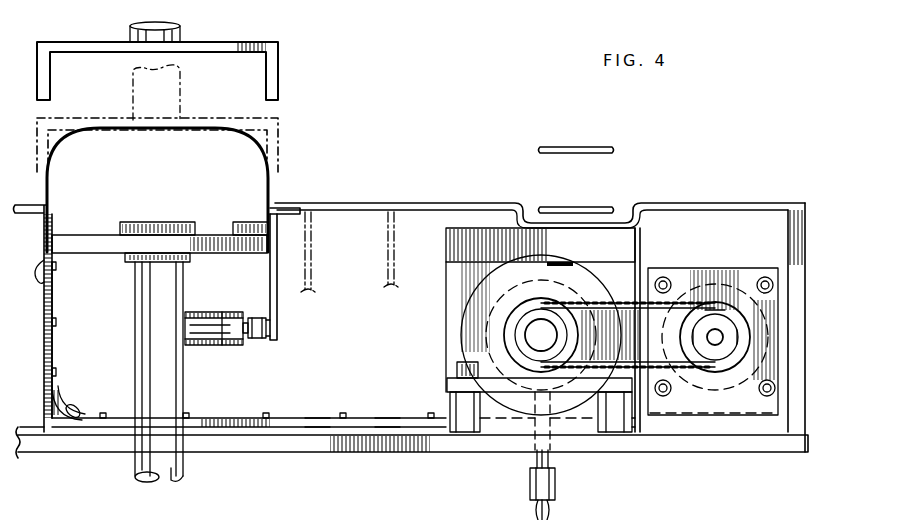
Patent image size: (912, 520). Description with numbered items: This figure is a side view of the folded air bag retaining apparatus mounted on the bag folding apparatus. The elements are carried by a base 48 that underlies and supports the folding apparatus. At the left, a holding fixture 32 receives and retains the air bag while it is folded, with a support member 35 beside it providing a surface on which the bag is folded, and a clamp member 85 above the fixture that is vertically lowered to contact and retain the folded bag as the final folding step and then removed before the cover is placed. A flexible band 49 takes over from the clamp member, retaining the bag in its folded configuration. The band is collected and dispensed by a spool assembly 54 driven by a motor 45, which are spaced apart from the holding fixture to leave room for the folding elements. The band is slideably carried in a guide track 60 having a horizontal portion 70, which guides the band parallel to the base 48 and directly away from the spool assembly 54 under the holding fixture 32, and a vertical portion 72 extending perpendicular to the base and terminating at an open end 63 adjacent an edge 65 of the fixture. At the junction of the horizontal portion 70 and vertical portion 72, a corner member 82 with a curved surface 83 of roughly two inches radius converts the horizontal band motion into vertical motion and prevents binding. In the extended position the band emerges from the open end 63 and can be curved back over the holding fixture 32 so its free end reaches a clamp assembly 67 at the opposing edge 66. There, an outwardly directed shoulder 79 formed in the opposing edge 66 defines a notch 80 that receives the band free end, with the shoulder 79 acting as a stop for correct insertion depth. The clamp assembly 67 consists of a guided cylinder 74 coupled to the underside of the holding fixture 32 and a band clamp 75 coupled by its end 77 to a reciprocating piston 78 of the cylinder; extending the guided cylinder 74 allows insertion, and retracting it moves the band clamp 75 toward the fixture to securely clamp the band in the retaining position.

The clamp member 85 is at (283, 68).
The flexible band 49 is at (283, 146).
The holding fixture 32 is at (99, 236).
The edge 65 is at (48, 222).
The opposing edge 66 is at (272, 222).
The notch 80 is at (258, 232).
The support member 35 is at (327, 205).
The spool assembly 54 is at (462, 286).
The outwardly directed shoulder 79 is at (263, 265).
The open end 63 is at (52, 283).
The vertical portion 72 is at (58, 344).
The guided cylinder 74 is at (228, 312).
The reciprocating piston 78 is at (258, 320).
The band clamp 75 is at (280, 294).
The end 77 is at (278, 330).
The clamp assembly 67 is at (256, 348).
The guide track 60 is at (313, 413).
The horizontal portion 70 is at (387, 413).
The base 48 is at (330, 448).
The corner member 82 is at (56, 432).
The curved surface 83 is at (72, 426).
The motor 45 is at (735, 378).